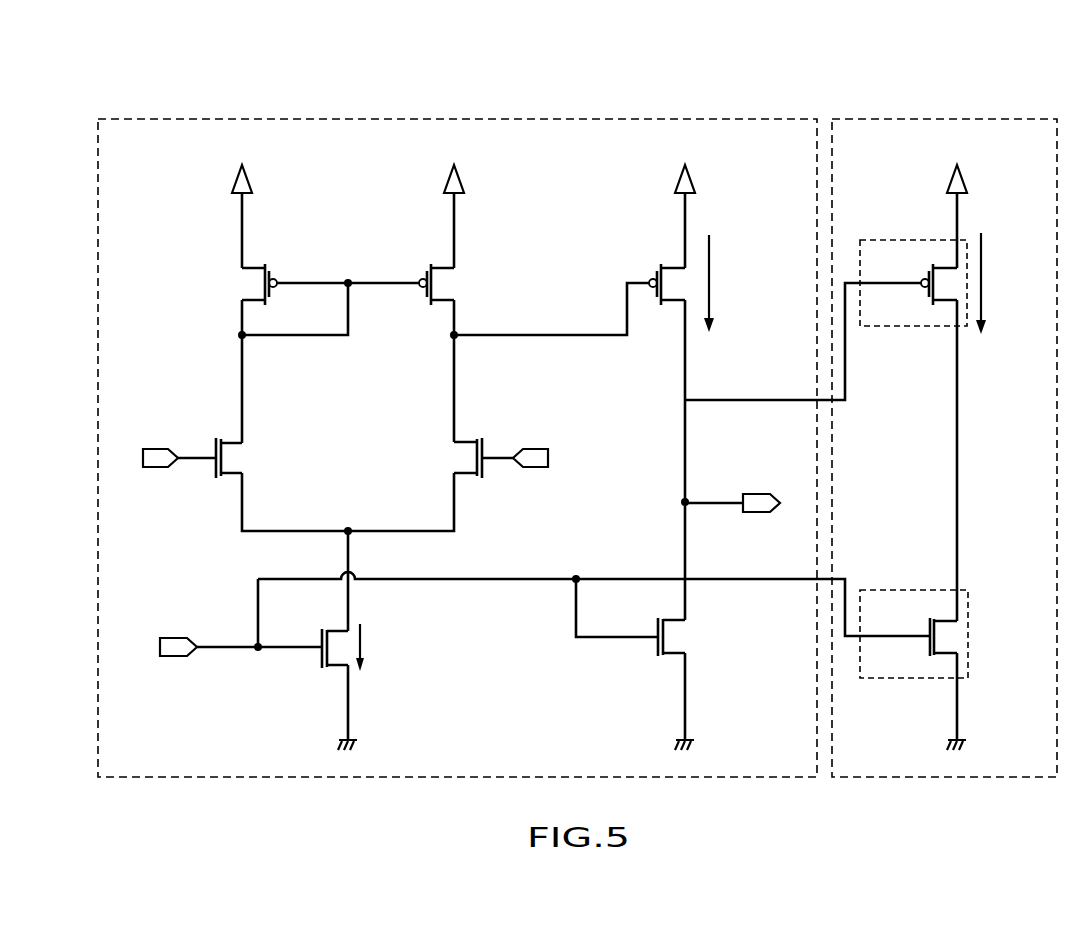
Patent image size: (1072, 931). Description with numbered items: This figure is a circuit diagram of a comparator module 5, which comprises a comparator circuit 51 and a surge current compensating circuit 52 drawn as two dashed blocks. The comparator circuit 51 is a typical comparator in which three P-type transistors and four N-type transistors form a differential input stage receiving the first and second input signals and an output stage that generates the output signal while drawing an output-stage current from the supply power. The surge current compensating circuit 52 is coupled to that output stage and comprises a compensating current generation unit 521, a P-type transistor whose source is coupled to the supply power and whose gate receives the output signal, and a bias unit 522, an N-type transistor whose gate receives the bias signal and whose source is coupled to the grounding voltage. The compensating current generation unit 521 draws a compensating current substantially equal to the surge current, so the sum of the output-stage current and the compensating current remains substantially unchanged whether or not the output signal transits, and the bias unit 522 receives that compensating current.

The comparator module 5 is at (121, 78).
The comparator circuit 51 is at (521, 118).
The surge current compensating circuit 52 is at (944, 118).
The compensating current generation unit 521 is at (882, 238).
The bias unit 522 is at (880, 590).